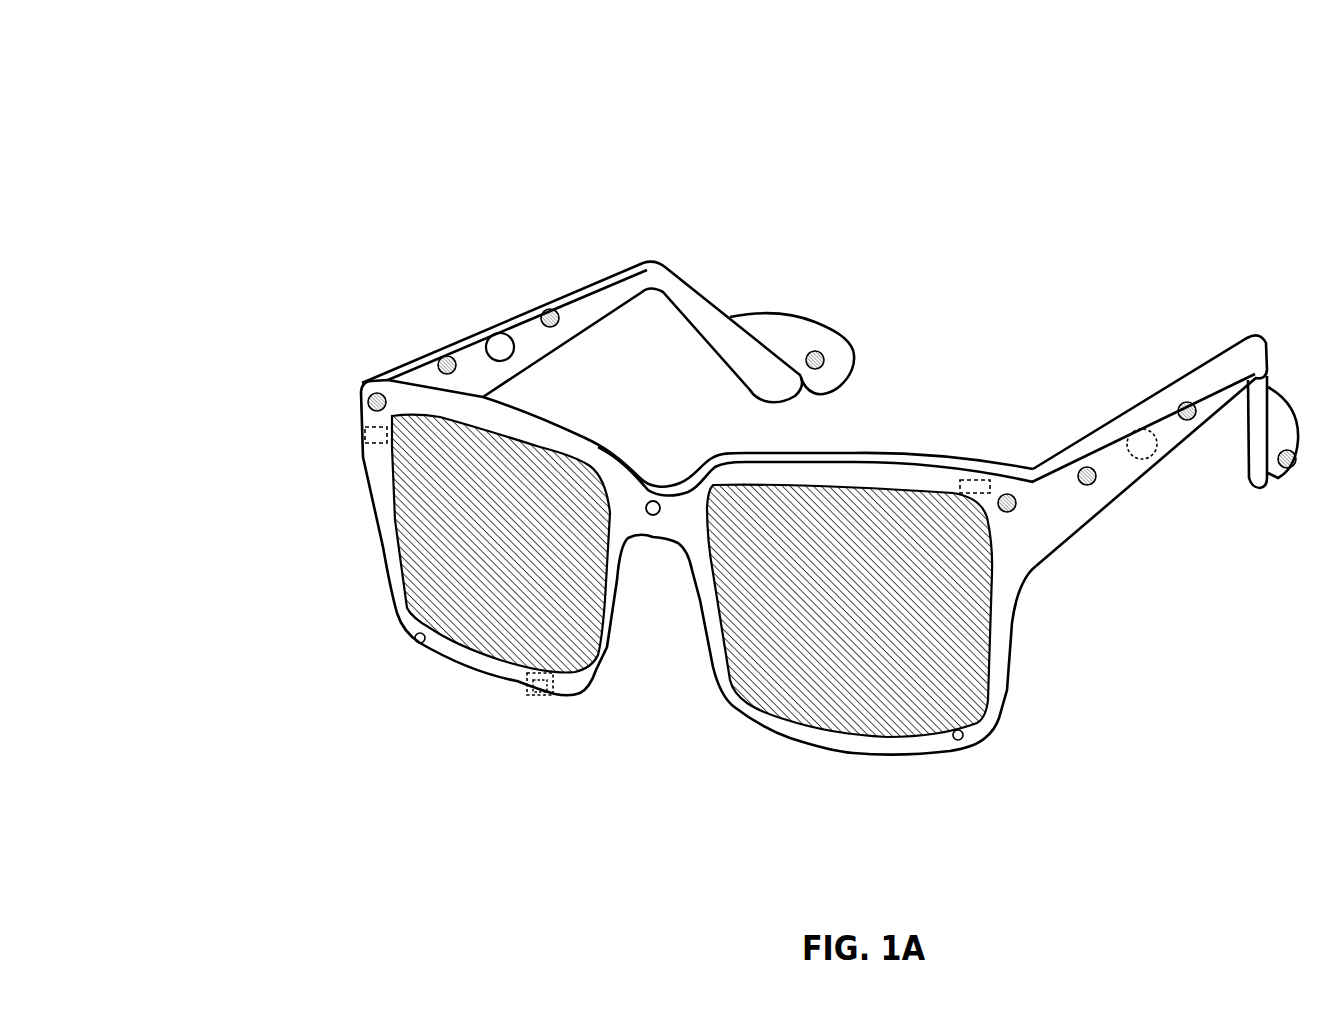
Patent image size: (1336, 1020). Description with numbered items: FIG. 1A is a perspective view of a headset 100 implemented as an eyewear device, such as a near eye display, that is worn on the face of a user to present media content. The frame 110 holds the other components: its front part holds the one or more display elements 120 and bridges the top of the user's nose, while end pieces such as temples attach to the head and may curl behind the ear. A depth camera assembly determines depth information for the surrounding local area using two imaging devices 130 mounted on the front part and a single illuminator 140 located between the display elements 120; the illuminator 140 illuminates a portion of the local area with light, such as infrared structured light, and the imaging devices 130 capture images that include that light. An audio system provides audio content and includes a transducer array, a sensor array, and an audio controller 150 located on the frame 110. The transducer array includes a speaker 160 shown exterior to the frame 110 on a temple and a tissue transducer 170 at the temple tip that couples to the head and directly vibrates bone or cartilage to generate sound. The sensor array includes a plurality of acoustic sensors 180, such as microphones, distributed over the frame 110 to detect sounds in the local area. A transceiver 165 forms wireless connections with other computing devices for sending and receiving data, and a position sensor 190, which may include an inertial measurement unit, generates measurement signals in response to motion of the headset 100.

The headset 100 is at (734, 442).
The frame 110 is at (1262, 336).
The display element 120 is at (443, 540).
The imaging device 130 is at (417, 644).
The illuminator 140 is at (652, 515).
The audio controller 150 is at (974, 486).
The speaker 160 is at (503, 333).
The transceiver 165 is at (368, 424).
The tissue transducer 170 is at (774, 318).
The acoustic sensor 180 is at (377, 393).
The position sensor 190 is at (542, 690).